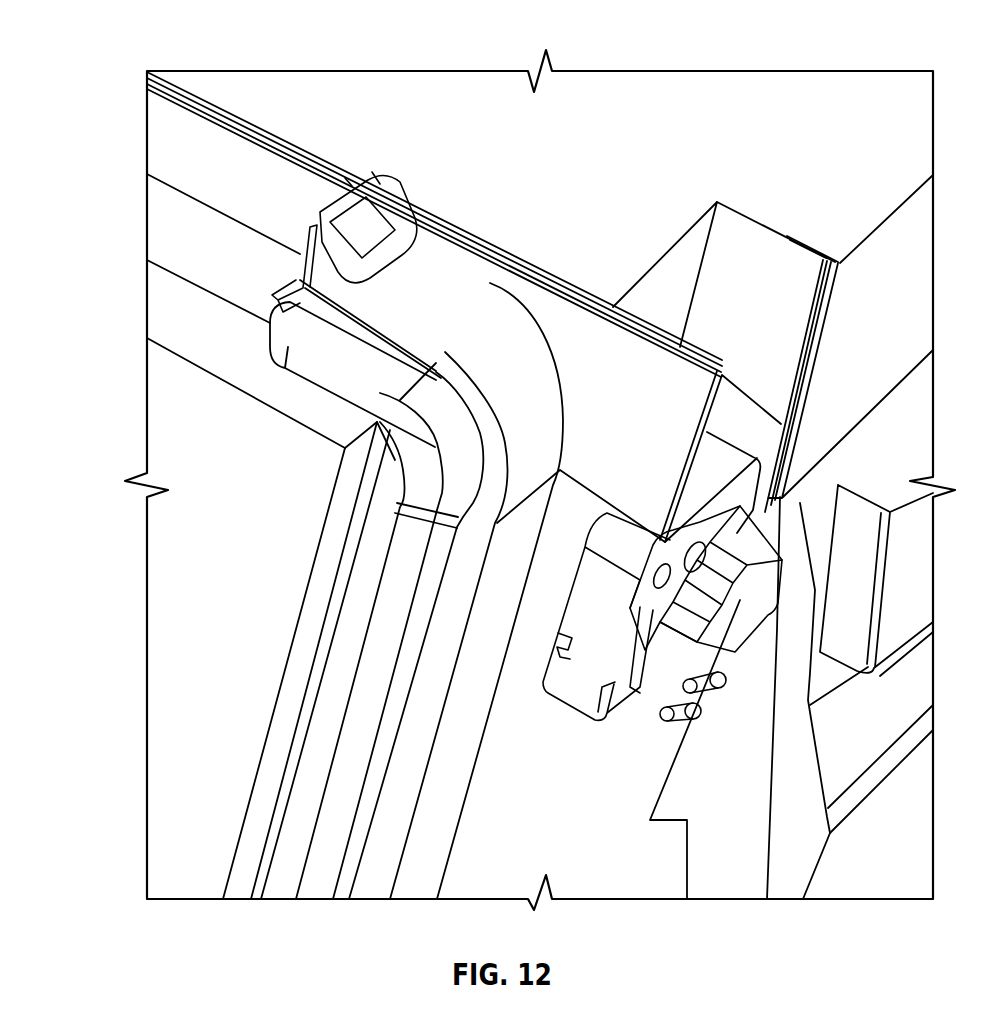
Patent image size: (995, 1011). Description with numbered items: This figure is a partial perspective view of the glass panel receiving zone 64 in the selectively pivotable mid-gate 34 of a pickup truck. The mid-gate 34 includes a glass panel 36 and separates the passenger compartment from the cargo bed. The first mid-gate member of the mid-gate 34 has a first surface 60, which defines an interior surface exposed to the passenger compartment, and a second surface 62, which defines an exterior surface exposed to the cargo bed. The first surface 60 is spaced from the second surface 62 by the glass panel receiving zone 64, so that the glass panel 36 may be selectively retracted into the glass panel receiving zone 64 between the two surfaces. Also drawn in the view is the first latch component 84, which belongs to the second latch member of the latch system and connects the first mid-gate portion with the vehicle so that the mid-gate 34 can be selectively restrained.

The mid-gate 34 is at (126, 501).
The glass panel 36 is at (160, 143).
The first surface 60 is at (187, 88).
The second surface 62 is at (195, 338).
The glass panel receiving zone 64 is at (120, 47).
The first latch component 84 is at (706, 704).